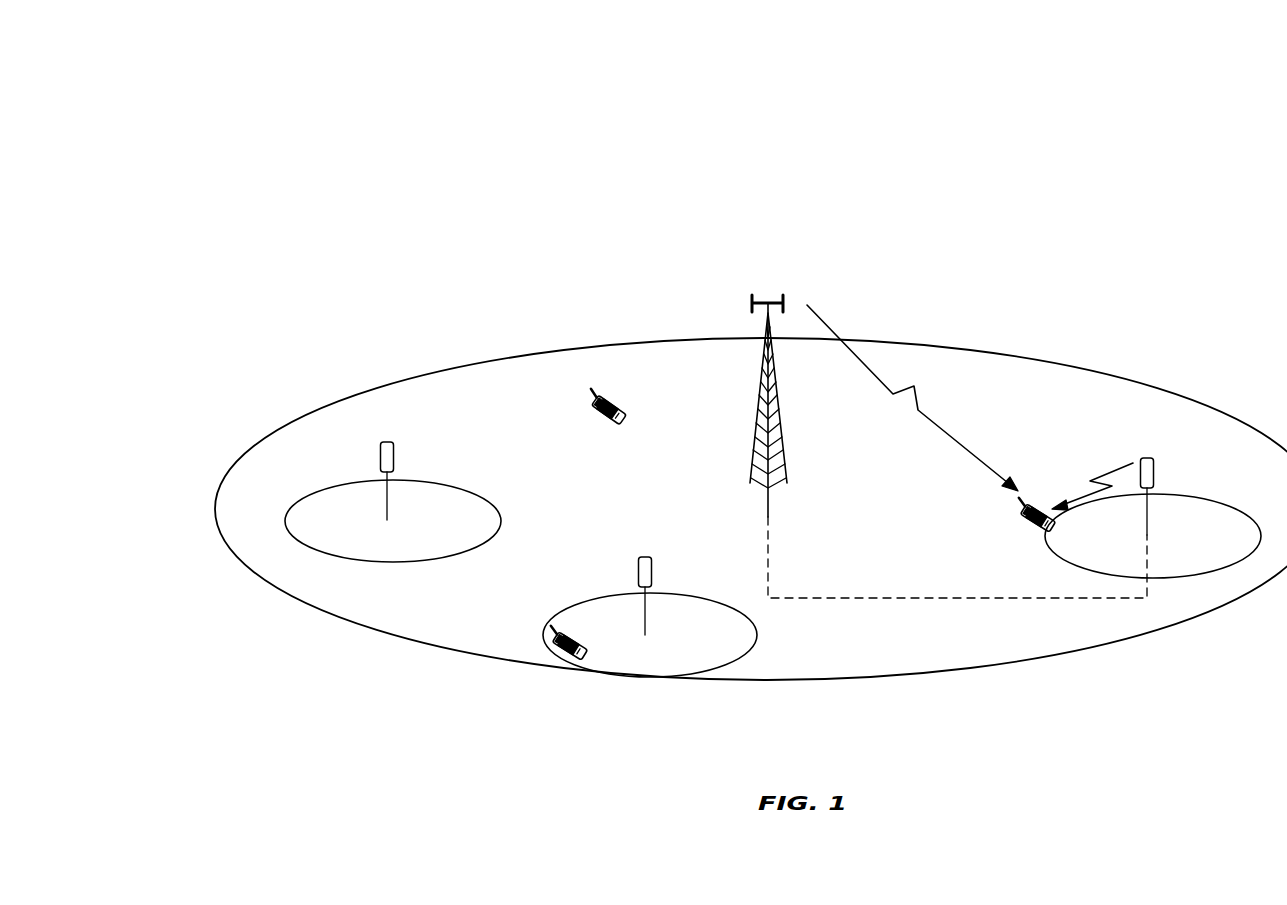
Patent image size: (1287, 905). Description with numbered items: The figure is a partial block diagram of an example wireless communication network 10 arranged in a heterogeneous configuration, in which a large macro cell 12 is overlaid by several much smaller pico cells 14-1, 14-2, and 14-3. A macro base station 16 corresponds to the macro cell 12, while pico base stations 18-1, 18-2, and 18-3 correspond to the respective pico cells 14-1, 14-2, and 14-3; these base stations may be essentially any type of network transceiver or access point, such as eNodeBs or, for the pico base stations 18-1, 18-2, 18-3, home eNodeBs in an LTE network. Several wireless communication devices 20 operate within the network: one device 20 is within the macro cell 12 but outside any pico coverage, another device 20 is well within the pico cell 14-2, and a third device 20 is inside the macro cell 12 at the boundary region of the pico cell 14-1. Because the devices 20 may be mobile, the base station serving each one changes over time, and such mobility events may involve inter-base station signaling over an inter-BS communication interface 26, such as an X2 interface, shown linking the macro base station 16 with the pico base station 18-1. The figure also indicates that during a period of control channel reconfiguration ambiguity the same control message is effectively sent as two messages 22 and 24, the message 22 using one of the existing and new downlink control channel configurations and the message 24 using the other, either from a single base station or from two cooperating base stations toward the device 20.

The wireless communication network 10 is at (1141, 148).
The macro cell 12 is at (247, 570).
The pico cell 14-1 is at (1218, 502).
The pico cell 14-2 is at (591, 600).
The pico cell 14-3 is at (450, 557).
The macro base station 16 is at (787, 480).
The pico base station 18-1 is at (1148, 505).
The pico base station 18-2 is at (647, 630).
The pico base station 18-3 is at (388, 518).
The wireless communication device 20 is at (603, 419).
The message 22 is at (918, 410).
The message 24 is at (1086, 494).
The inter-BS communication interface 26 is at (957, 559).